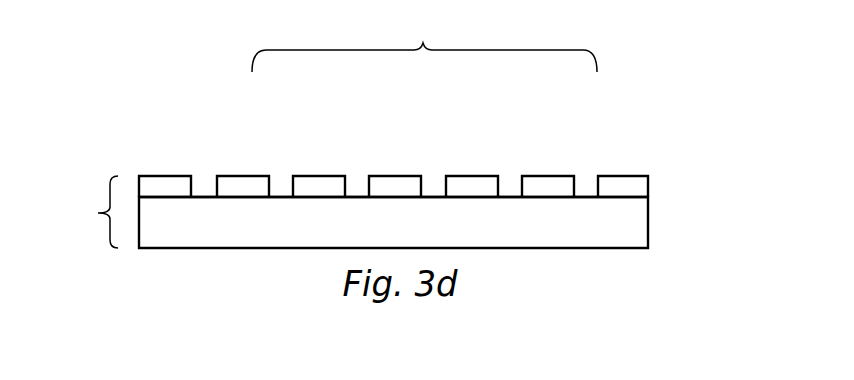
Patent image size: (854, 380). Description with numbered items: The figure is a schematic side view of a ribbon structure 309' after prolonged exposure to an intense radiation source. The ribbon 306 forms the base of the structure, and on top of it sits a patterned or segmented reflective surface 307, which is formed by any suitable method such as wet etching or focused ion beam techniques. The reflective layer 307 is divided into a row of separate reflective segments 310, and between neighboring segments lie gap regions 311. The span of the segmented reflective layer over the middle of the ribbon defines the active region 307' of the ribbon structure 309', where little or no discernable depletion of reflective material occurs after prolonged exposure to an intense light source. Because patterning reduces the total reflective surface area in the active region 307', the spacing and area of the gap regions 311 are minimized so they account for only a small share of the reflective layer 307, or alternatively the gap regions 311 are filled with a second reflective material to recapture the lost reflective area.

The ribbon 306 is at (648, 230).
The patterned reflective surface 307 is at (431, 193).
The active region 307' is at (424, 42).
The ribbon structure 309' is at (80, 212).
The raised portions / mesas 310 is at (146, 177).
The gap regions 311 is at (203, 190).